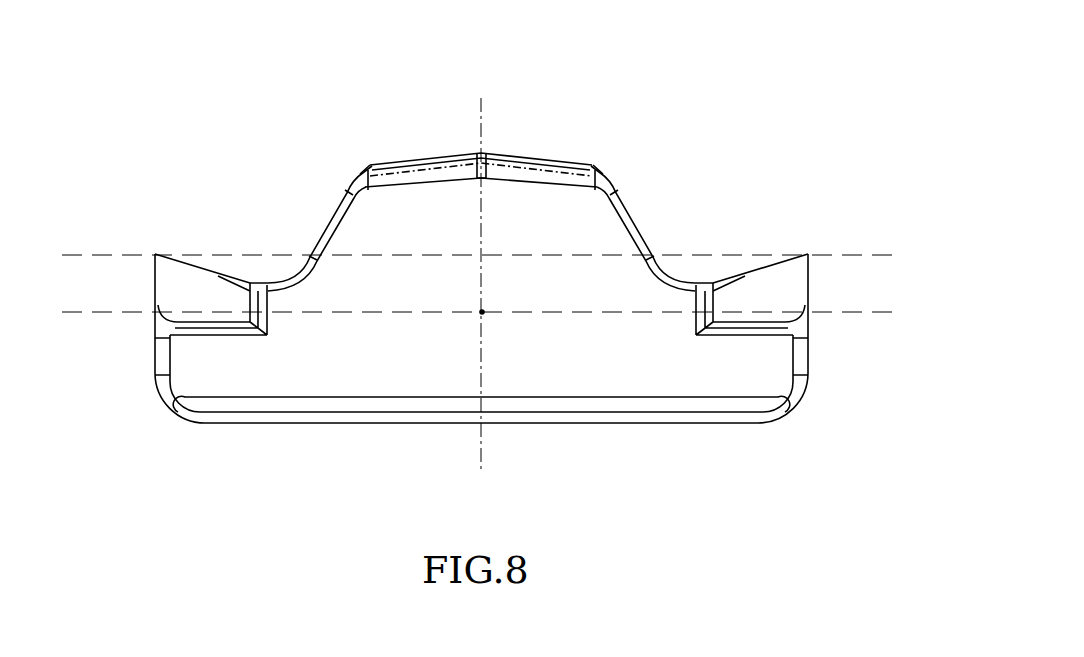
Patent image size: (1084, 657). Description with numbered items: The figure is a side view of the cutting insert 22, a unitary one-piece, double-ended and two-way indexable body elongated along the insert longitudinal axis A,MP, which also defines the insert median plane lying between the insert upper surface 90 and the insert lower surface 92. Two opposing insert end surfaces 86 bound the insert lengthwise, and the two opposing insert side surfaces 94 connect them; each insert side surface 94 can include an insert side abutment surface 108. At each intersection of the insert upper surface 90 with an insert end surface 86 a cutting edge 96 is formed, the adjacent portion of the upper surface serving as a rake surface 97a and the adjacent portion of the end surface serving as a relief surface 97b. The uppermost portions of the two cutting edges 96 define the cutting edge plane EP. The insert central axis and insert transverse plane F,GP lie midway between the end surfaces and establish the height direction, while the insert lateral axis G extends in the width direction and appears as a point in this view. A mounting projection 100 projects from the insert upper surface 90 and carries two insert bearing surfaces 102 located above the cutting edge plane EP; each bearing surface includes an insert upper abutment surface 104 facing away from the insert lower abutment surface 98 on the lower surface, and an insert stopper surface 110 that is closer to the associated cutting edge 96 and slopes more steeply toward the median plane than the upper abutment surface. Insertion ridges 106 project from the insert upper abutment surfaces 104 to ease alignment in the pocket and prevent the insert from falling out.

The cutting insert 22 is at (771, 82).
The insert end surfaces 86 is at (157, 357).
The insert upper surface 90 is at (476, 154).
The insert lower surface 92 is at (481, 448).
The insert side surfaces 94 is at (598, 218).
The cutting edges 96 is at (485, 247).
The rake surface 97a is at (188, 258).
The relief surface 97b is at (153, 278).
The insert lower abutment surface 98 is at (287, 417).
The mounting projection 100 is at (479, 103).
The insert bearing surfaces 102 is at (476, 177).
The insert upper abutment surface 104 is at (436, 158).
The insertion ridges 106 is at (430, 158).
The insert side abutment surface 108 is at (410, 360).
The insert stopper surface 110 is at (327, 223).
The insert lateral axis G is at (486, 310).
The cutting edge plane EP is at (867, 255).
The insert longitudinal axis and insert median plane A,MP is at (862, 312).
The insert central axis and insert transverse plane F,GP is at (484, 118).